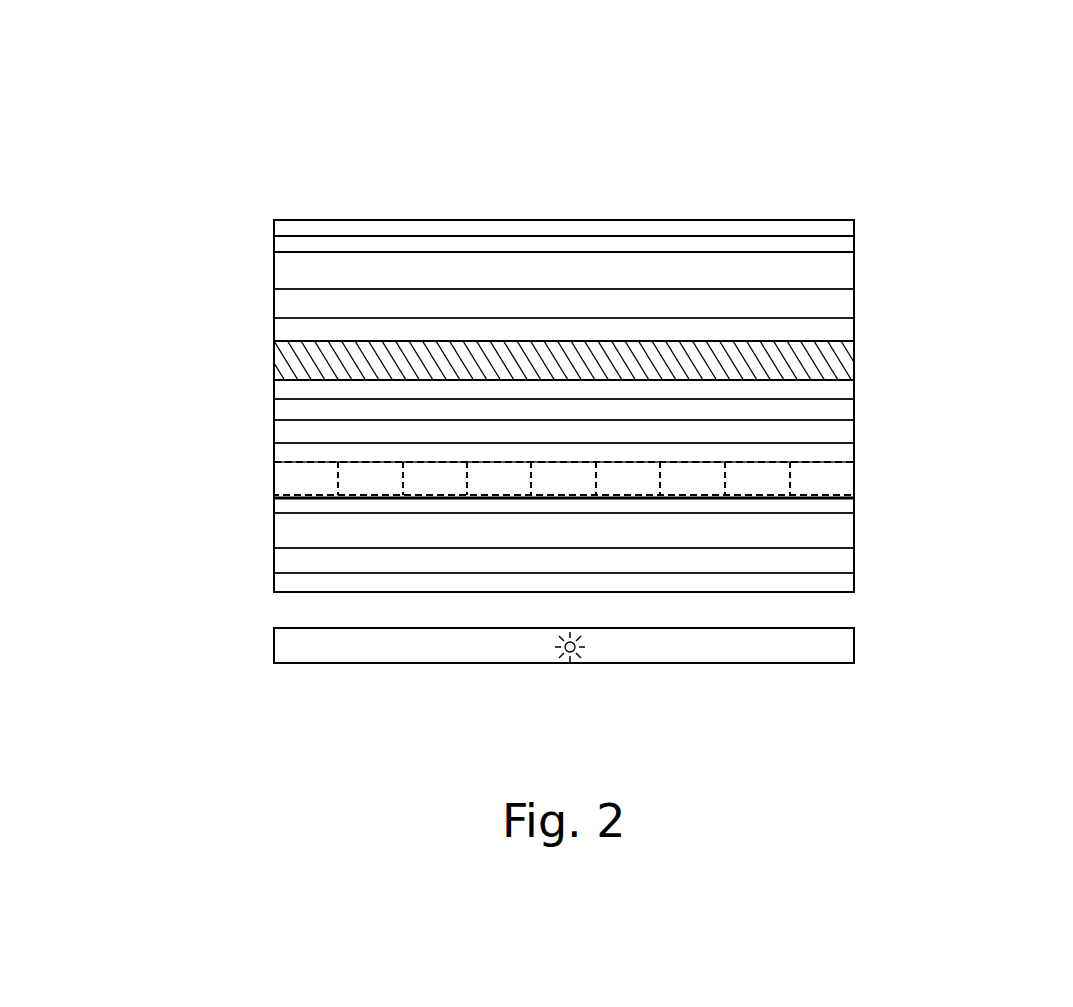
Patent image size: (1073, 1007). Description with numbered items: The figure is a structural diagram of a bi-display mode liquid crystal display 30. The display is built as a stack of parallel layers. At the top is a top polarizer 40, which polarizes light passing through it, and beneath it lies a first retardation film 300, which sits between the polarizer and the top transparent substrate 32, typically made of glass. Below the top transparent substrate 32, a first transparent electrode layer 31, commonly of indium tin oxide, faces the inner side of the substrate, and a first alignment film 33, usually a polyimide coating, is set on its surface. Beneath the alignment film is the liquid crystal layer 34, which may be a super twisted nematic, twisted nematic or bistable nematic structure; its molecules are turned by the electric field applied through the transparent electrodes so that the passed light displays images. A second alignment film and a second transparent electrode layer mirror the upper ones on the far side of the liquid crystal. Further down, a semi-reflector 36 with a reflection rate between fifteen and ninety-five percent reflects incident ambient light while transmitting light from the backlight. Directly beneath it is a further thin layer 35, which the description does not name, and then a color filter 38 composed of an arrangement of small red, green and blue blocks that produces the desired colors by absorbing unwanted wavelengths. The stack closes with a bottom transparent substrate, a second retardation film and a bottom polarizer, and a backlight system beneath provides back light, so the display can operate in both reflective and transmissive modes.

The liquid crystal display 30 is at (254, 158).
The top polarizer 40 is at (836, 230).
The first retardation film 300 is at (293, 243).
The top transparent substrate 32 is at (843, 262).
The first transparent electrode layer 31 is at (293, 305).
The first alignment film 33 is at (293, 330).
The liquid crystal layer 34 is at (843, 355).
The semi-reflector 36 is at (846, 433).
The black matrix layer 35 is at (295, 457).
The color filter 38 is at (845, 475).